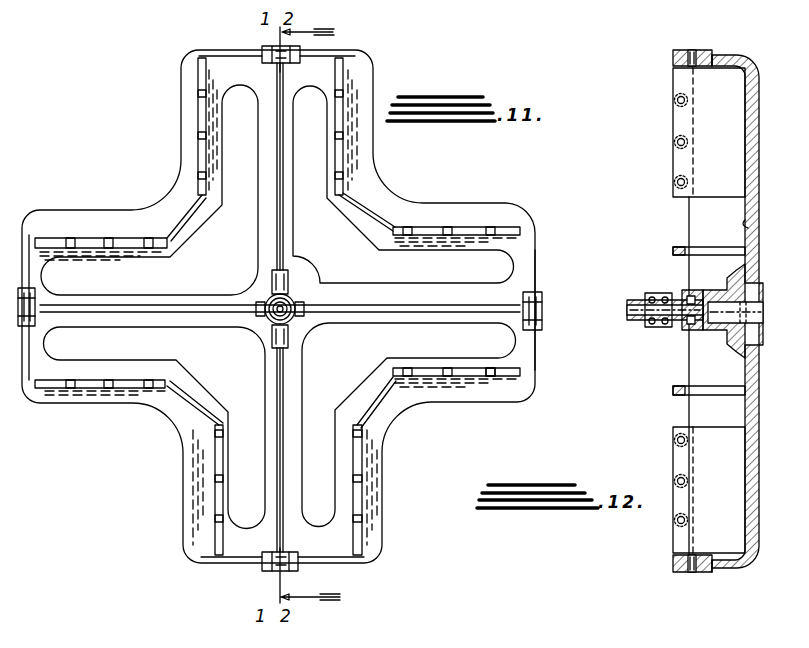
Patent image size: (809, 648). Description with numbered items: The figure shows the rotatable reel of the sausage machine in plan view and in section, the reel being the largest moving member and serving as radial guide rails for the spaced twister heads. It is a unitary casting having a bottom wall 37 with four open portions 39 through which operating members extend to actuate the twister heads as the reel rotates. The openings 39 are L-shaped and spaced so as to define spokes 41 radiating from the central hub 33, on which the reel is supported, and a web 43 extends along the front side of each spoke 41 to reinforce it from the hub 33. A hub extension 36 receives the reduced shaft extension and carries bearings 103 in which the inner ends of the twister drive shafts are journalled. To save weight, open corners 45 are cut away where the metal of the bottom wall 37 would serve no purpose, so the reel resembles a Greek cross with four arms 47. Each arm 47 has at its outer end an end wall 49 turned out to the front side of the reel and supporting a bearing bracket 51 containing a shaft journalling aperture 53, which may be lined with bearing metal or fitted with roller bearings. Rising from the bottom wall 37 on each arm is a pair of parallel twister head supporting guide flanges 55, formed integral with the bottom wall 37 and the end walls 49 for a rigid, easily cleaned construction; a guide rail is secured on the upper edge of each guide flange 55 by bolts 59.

In FIG. 11, the hub 33 is at (293, 300).
In FIG. 12, the hub 33 is at (718, 336).
In FIG. 12, the hub extension 36 is at (672, 295).
In FIG. 11, the bottom wall 37 is at (110, 406).
In FIG. 12, the bottom wall 37 is at (760, 152).
In FIG. 11, the open portions 39 is at (241, 371).
In FIG. 11, the spokes 41 is at (150, 322).
In FIG. 11, the web 43 is at (278, 242).
In FIG. 12, the web 43 is at (740, 224).
In FIG. 11, the open corners 45 is at (423, 190).
In FIG. 11, the arms 47 is at (517, 274).
In FIG. 11, the end wall 49 is at (300, 53).
In FIG. 12, the end wall 49 is at (732, 57).
In FIG. 11, the bearing bracket 51 is at (266, 48).
In FIG. 12, the bearing bracket 51 is at (700, 50).
In FIG. 12, the shaft journalling aperture 53 is at (692, 50).
In FIG. 11, the guide flanges 55 is at (92, 240).
In FIG. 12, the guide flanges 55 is at (703, 110).
In FIG. 11, the bolts 59 is at (490, 369).
In FIG. 12, the bolts 59 is at (677, 177).
In FIG. 12, the bearings 103 is at (690, 332).